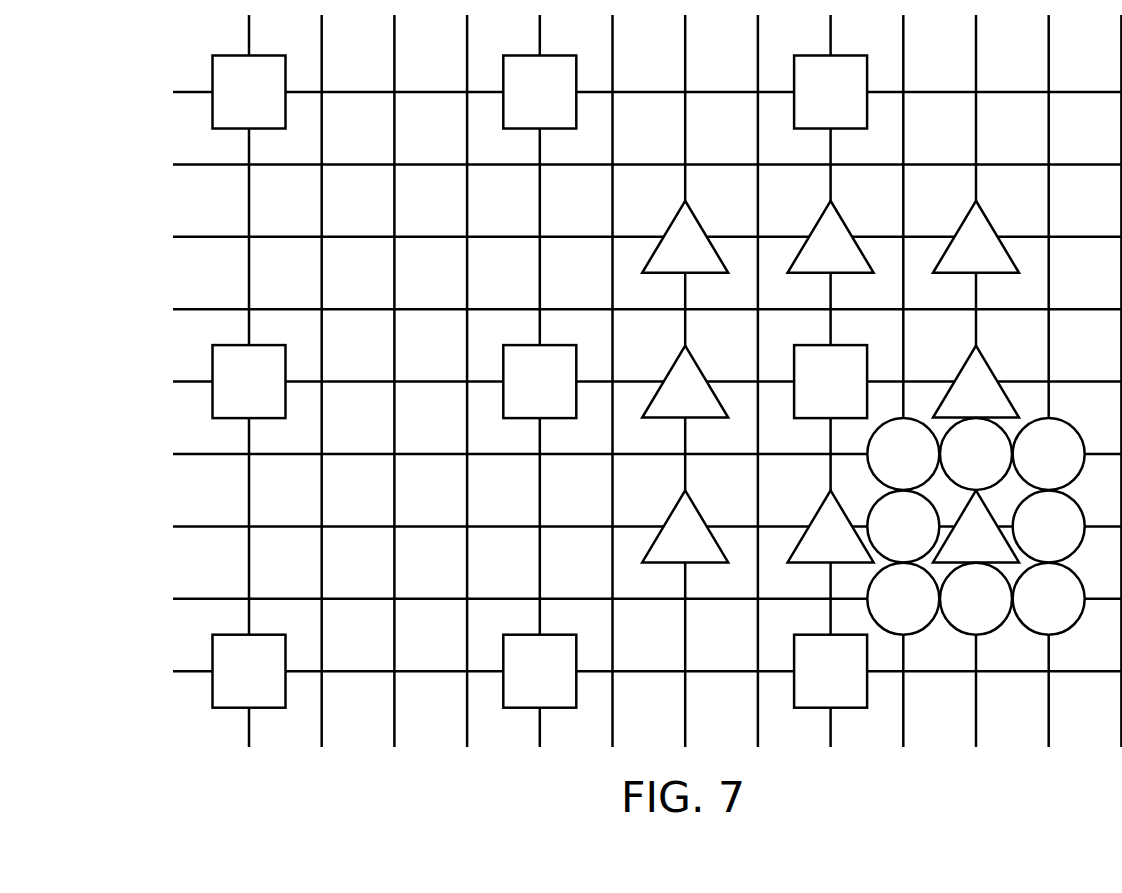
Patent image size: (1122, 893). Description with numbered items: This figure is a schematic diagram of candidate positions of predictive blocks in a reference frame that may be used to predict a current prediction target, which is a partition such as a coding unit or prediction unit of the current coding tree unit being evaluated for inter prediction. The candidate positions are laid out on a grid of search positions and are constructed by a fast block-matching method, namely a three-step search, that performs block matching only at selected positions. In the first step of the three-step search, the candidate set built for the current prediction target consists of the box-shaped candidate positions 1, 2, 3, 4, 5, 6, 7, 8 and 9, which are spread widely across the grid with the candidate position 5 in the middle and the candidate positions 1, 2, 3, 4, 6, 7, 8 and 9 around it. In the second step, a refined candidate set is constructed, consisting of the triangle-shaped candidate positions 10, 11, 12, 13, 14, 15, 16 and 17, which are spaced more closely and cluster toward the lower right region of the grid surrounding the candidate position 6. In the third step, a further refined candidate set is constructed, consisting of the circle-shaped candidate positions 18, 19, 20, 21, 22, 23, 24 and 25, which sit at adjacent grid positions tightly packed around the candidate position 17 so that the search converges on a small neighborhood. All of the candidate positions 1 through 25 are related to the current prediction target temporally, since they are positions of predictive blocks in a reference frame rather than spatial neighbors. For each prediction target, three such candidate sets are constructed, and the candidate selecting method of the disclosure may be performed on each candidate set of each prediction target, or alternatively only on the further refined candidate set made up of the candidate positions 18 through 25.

The candidate position 1 is at (249, 92).
The candidate position 2 is at (539, 92).
The candidate position 3 is at (830, 92).
The candidate position 4 is at (249, 381).
The candidate position 5 is at (539, 381).
The candidate position 6 is at (830, 381).
The candidate position 7 is at (249, 671).
The candidate position 8 is at (539, 671).
The candidate position 9 is at (830, 671).
The candidate position 10 is at (685, 237).
The candidate position 11 is at (831, 237).
The candidate position 12 is at (976, 237).
The candidate position 13 is at (685, 382).
The candidate position 14 is at (976, 382).
The candidate position 15 is at (685, 526).
The candidate position 16 is at (831, 526).
The candidate position 17 is at (976, 526).
The candidate position 18 is at (903, 454).
The candidate position 19 is at (976, 454).
The candidate position 20 is at (1049, 454).
The candidate position 21 is at (903, 526).
The candidate position 22 is at (1049, 526).
The candidate position 23 is at (903, 599).
The candidate position 24 is at (976, 599).
The candidate position 25 is at (1049, 599).